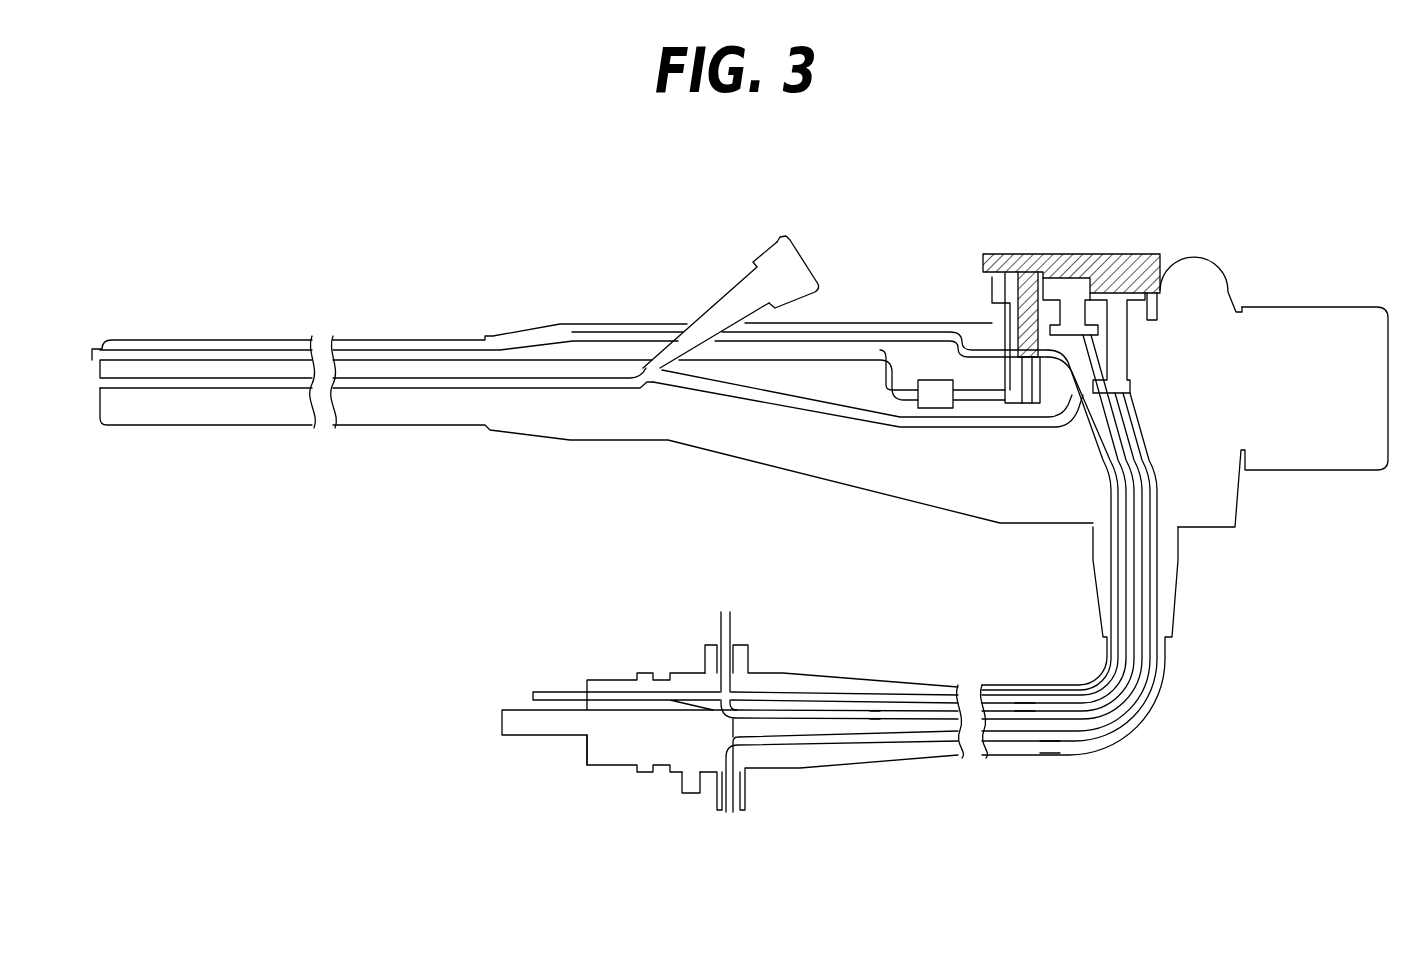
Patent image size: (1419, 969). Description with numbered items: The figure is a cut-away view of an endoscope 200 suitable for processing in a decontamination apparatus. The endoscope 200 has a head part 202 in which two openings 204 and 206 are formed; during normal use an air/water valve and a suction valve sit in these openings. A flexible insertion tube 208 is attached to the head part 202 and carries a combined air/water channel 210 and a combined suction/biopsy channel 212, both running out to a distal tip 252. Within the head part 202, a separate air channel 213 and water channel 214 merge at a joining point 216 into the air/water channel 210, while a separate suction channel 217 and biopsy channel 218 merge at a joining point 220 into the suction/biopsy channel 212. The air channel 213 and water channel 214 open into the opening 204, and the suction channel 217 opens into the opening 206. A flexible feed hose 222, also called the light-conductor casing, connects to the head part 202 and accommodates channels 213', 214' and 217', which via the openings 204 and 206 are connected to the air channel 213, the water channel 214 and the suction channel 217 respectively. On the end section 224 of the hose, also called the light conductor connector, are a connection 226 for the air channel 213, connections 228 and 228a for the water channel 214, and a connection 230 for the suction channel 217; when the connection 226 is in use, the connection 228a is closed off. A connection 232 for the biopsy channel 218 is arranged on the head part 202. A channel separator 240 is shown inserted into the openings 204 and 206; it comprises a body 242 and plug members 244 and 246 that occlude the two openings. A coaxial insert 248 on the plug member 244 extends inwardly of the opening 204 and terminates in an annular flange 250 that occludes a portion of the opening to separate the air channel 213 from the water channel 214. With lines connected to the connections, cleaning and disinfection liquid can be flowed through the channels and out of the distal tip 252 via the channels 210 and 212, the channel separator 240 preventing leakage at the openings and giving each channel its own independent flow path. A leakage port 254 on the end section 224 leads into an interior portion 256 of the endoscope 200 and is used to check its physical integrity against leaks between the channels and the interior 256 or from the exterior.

The endoscope 200 is at (920, 216).
The head part 202 is at (1240, 298).
The opening 204 is at (1010, 330).
The opening 206 is at (1045, 327).
The flexible insertion tube 208 is at (257, 338).
The combined air/water channel 210 is at (134, 353).
The combined suction/biopsy channel 212 is at (178, 385).
The air channel 213 is at (881, 302).
The channel 213' is at (1026, 659).
The water channel 214 is at (625, 426).
The channel 214' is at (910, 659).
The joining point 216 is at (520, 350).
The suction channel 217 is at (868, 454).
The channel 217' is at (1041, 787).
The biopsy channel 218 is at (720, 318).
The joining point 220 is at (648, 374).
The flexible feed hose 222 is at (1144, 734).
The end section 224 is at (590, 767).
The connection 226 is at (748, 667).
The connection 228 is at (553, 700).
The connection 228a is at (710, 667).
The connection 230 is at (722, 800).
The connection 232 is at (855, 220).
The channel separator 240 is at (1112, 202).
The body 242 is at (1060, 252).
The plug member 244 is at (1028, 252).
The plug member 246 is at (1132, 252).
The coaxial insert 248 is at (1110, 322).
The annular flange 250 is at (1022, 395).
The distal tip 252 is at (102, 442).
The leakage port 254 is at (685, 785).
The interior portion 256 is at (663, 747).